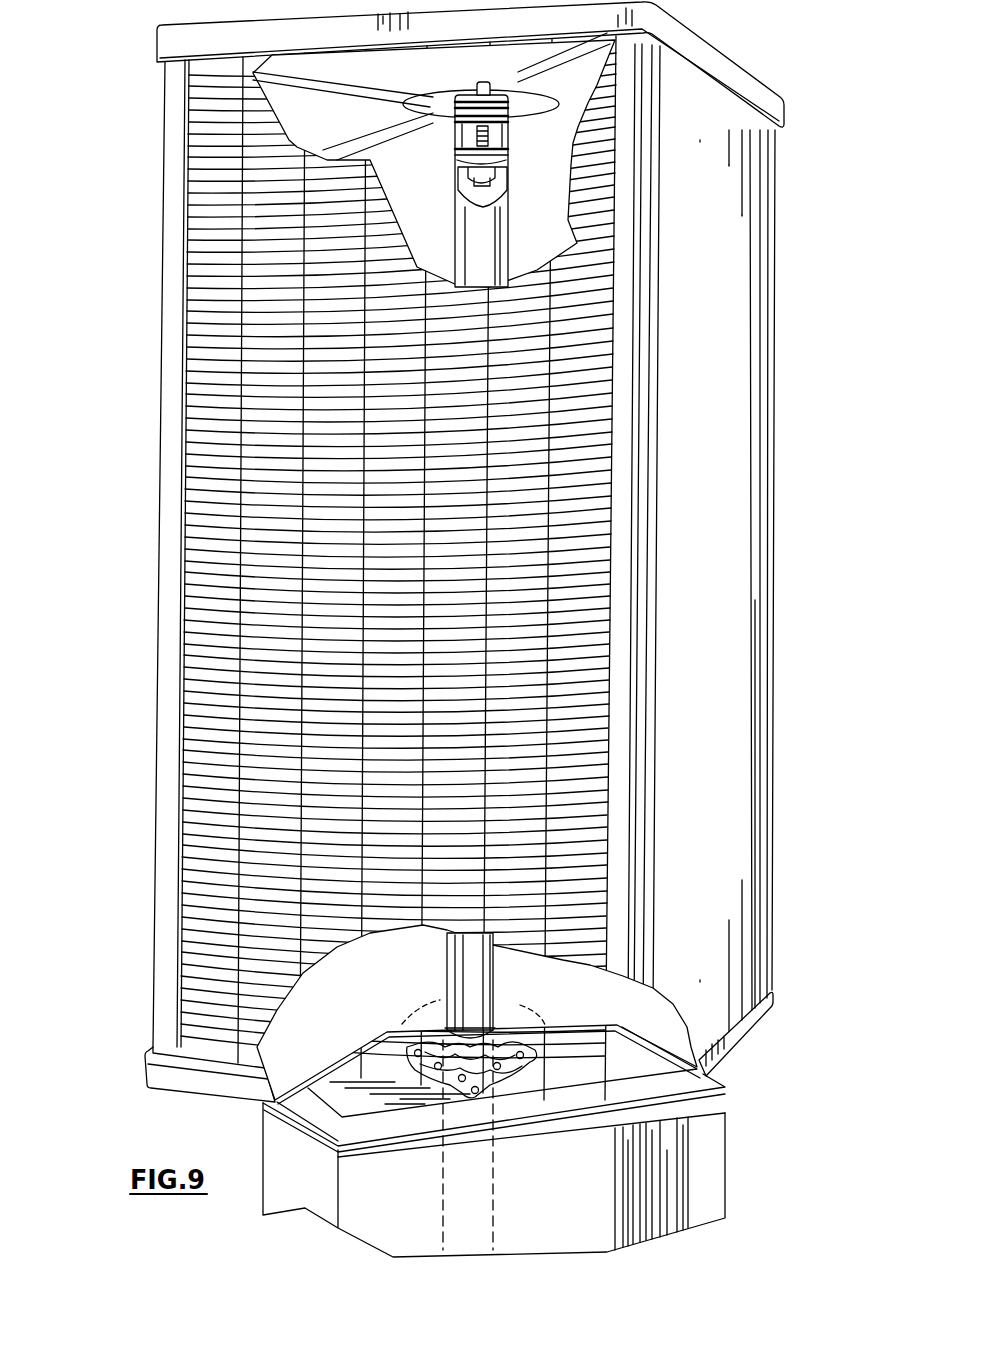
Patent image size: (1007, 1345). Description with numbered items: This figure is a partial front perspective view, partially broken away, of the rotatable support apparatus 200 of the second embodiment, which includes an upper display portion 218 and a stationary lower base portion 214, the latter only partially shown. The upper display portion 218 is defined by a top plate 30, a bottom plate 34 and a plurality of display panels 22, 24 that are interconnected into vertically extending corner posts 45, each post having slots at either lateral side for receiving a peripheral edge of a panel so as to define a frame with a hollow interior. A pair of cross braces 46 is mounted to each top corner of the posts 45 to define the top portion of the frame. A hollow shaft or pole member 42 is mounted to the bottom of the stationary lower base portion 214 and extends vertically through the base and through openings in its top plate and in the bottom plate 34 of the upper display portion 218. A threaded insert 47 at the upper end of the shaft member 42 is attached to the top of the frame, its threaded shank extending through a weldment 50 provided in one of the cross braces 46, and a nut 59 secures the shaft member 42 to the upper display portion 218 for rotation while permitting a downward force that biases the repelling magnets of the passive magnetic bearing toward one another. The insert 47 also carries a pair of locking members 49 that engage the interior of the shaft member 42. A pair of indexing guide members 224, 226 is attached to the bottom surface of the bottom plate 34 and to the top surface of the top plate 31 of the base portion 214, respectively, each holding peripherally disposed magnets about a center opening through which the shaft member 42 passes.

The rotatable support apparatus 200 is at (463, 628).
The display panel 22 is at (212, 453).
The display panel 24 is at (718, 420).
The top plate 30 is at (560, 20).
The top plate 31 is at (673, 1100).
The bottom plate 34 is at (747, 1027).
The hollow shaft or pole member 42 is at (478, 646).
The corner post 45 is at (167, 667).
The cross brace 46 is at (363, 141).
The threaded insert 47 is at (508, 133).
The locking member 49 is at (458, 150).
The weldment 50 is at (431, 100).
The nut 59 is at (479, 88).
The stationary lower base portion 214 is at (532, 1142).
The upper display portion 218 is at (482, 626).
The indexing guide member 224 is at (505, 1033).
The indexing guide member 226 is at (513, 1070).